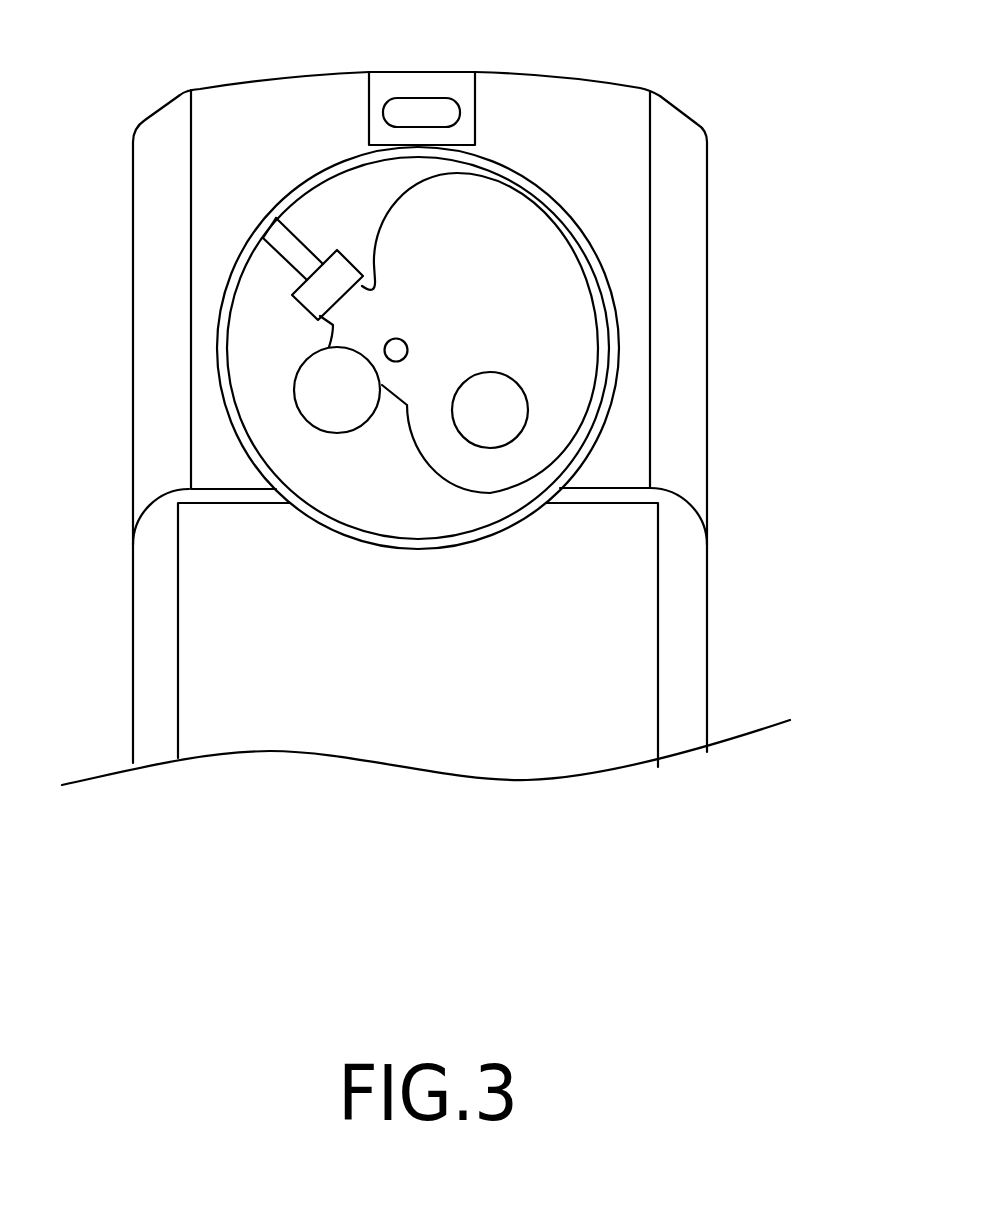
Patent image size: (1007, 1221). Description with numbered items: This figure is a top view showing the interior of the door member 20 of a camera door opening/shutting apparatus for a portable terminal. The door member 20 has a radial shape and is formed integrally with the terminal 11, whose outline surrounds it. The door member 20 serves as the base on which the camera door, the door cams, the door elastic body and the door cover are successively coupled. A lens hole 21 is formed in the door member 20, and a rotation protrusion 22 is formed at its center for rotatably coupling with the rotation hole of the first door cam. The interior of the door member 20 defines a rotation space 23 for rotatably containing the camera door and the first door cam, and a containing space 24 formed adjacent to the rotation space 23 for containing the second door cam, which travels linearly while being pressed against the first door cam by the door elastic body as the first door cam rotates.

The terminal 11 is at (552, 65).
The door member 20 is at (827, 234).
The lens hole 21 is at (500, 440).
The rotation protrusion 22 is at (407, 344).
The rotation space 23 is at (547, 255).
The containing space 24 is at (302, 304).